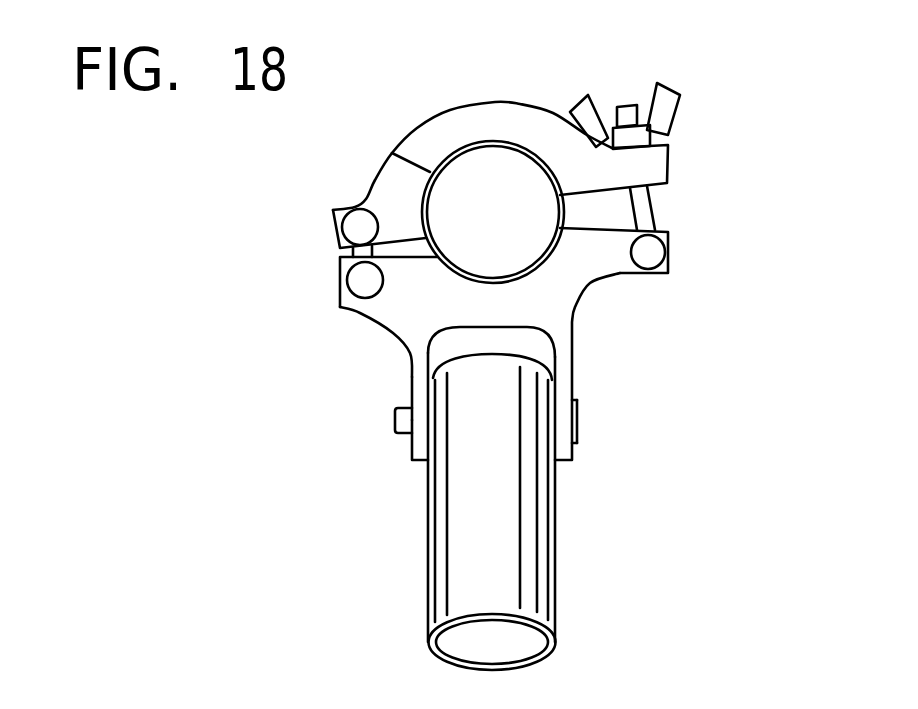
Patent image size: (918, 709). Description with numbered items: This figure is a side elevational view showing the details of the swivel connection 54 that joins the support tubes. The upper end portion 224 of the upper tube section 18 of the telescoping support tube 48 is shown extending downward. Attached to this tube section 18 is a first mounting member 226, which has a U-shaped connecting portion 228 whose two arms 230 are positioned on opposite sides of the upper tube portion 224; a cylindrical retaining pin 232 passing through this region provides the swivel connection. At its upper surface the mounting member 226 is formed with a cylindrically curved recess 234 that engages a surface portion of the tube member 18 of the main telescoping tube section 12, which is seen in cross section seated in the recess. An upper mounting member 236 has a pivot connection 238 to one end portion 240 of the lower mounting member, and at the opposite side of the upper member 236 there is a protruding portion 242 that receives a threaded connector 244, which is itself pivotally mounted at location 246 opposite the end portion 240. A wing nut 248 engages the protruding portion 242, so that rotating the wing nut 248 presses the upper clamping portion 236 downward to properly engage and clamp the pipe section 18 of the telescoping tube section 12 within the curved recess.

The main telescoping tube section 12 is at (447, 152).
The telescoping tube section 18 is at (393, 148).
The telescoping support tube 48 is at (570, 543).
The swivel connection 54 is at (590, 380).
The upper end portion 224 is at (498, 492).
The first mounting member 226 is at (587, 263).
The U-shaped connecting portion 228 is at (417, 367).
The arms 230 is at (417, 395).
The cylindrical retaining pin 232 is at (403, 427).
The cylindrically curved recess 234 is at (478, 280).
The upper mounting member 236 is at (477, 125).
The pivot connection 238 is at (357, 229).
The end portion 240 is at (365, 280).
The protruding portion 242 is at (647, 168).
The threaded connector 244 is at (645, 208).
The pivot mounting location 246 is at (657, 252).
The wing nut 248 is at (663, 110).